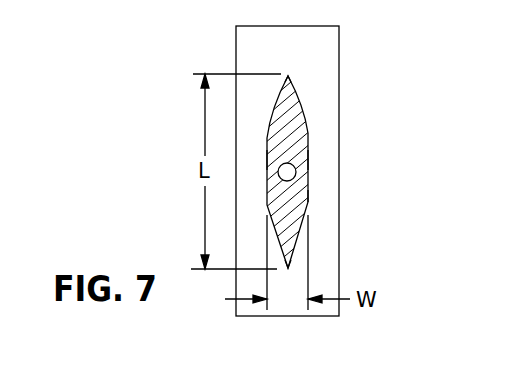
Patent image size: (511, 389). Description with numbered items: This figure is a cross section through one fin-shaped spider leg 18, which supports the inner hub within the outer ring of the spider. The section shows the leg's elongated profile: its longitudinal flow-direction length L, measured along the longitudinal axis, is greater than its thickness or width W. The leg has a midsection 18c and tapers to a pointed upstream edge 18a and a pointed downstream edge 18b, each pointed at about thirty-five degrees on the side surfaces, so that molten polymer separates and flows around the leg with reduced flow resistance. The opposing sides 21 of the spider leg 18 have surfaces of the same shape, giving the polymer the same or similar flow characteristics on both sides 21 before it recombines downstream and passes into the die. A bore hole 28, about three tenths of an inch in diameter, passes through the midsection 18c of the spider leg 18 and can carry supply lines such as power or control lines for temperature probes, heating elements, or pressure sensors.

The spider leg 18 is at (305, 128).
The upstream edge 18a is at (289, 76).
The downstream edge 18b is at (298, 268).
The midsection 18c is at (306, 160).
The sides 21 is at (267, 160).
The bore hole 28 is at (297, 175).